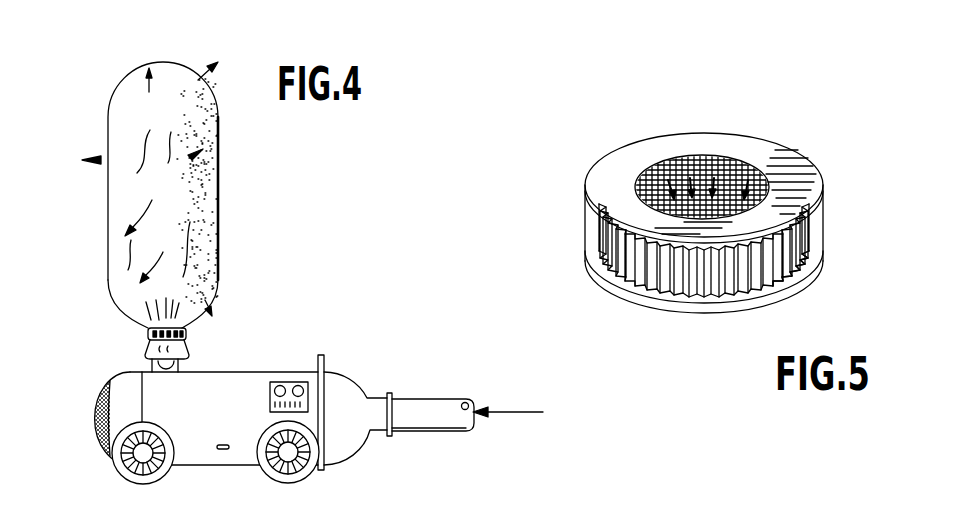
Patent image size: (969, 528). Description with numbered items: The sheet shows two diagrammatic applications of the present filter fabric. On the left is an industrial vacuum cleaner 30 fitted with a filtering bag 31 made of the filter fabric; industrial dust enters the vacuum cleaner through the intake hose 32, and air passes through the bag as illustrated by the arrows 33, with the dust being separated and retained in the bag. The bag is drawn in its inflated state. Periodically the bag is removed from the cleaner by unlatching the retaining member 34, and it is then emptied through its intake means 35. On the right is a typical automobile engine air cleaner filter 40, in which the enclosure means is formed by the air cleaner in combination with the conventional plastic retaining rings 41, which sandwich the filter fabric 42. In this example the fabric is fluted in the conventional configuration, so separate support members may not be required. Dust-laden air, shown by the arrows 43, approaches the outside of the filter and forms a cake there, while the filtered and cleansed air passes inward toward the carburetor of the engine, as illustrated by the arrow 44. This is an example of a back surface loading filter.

In FIG. 4, the industrial vacuum cleaner 30 is at (262, 372).
In FIG. 4, the filtering bag 31 is at (166, 62).
In FIG. 4, the intake hose 32 is at (414, 399).
In FIG. 4, the arrows 33 is at (120, 173).
In FIG. 4, the retaining member 34 is at (148, 334).
In FIG. 4, the intake means 35 is at (180, 366).
In FIG. 5, the automobile engine air cleaner filter 40 is at (719, 231).
In FIG. 5, the plastic retaining rings 41 is at (618, 160).
In FIG. 5, the filter fabric 42 is at (781, 280).
In FIG. 5, the arrows 43 is at (638, 274).
In FIG. 5, the arrow 44 is at (672, 165).